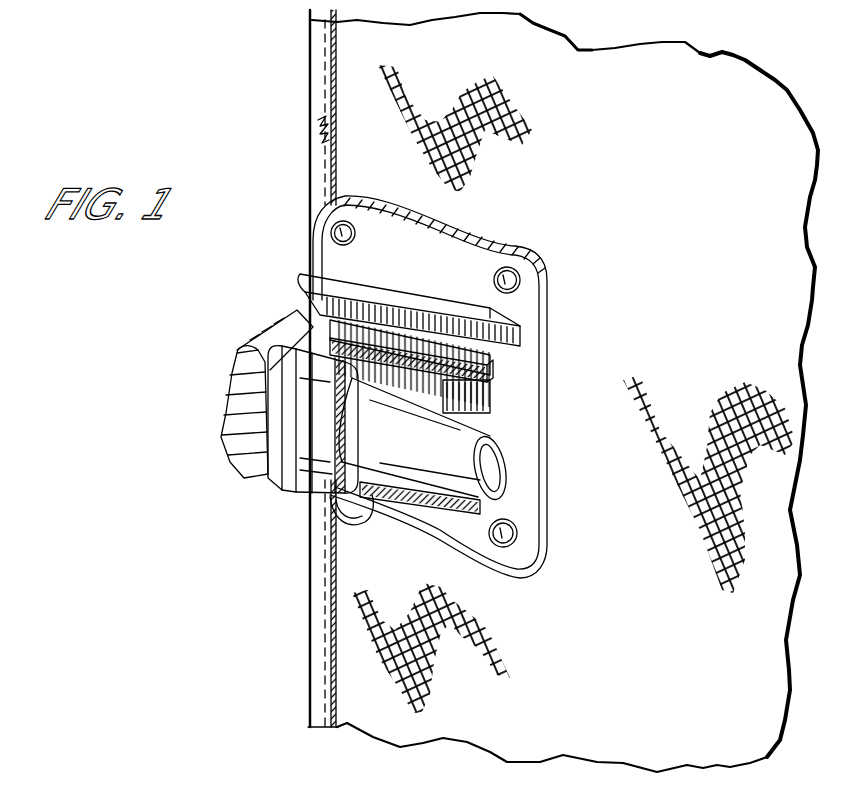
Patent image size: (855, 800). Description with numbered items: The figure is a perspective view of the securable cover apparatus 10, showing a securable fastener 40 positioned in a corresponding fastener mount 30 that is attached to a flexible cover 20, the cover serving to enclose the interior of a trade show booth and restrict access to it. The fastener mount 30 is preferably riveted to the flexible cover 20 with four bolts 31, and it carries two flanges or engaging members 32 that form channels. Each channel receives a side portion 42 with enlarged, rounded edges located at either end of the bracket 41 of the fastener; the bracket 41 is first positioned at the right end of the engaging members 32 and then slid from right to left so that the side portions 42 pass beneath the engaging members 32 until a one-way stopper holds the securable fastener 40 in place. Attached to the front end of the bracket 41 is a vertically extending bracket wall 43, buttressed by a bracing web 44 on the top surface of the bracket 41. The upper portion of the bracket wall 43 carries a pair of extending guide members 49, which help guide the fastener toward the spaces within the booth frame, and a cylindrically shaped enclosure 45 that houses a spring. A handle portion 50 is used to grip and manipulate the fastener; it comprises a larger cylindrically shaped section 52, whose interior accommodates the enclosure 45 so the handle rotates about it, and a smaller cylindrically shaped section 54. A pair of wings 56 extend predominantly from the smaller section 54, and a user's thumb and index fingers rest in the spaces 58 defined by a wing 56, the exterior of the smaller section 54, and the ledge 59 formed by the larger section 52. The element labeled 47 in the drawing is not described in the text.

The securable cover apparatus 10 is at (250, 52).
The flexible cover 20 is at (516, 740).
The fastener mount 30 is at (467, 385).
The bolts 31 is at (357, 230).
The engaging members 32 is at (380, 307).
The securable fastener 40 is at (200, 423).
The bracket 41 is at (505, 354).
The side portions 42 is at (433, 342).
The bracket wall 43 is at (290, 337).
The bracing web 44 is at (323, 323).
The cylindrically shaped enclosure 45 is at (270, 480).
The knob 47 is at (250, 473).
The guide members 49 is at (232, 357).
The handle portion 50 is at (403, 503).
The larger cylindrically shaped section 52 is at (307, 467).
The smaller cylindrically shaped section 54 is at (460, 460).
The wings 56 is at (500, 403).
The spaces 58 is at (360, 517).
The ledge 59 is at (333, 527).